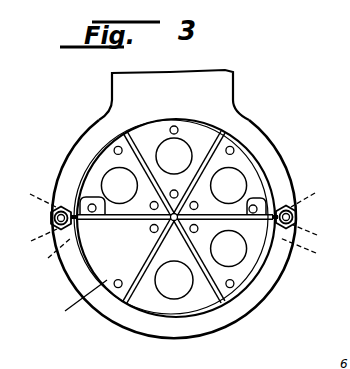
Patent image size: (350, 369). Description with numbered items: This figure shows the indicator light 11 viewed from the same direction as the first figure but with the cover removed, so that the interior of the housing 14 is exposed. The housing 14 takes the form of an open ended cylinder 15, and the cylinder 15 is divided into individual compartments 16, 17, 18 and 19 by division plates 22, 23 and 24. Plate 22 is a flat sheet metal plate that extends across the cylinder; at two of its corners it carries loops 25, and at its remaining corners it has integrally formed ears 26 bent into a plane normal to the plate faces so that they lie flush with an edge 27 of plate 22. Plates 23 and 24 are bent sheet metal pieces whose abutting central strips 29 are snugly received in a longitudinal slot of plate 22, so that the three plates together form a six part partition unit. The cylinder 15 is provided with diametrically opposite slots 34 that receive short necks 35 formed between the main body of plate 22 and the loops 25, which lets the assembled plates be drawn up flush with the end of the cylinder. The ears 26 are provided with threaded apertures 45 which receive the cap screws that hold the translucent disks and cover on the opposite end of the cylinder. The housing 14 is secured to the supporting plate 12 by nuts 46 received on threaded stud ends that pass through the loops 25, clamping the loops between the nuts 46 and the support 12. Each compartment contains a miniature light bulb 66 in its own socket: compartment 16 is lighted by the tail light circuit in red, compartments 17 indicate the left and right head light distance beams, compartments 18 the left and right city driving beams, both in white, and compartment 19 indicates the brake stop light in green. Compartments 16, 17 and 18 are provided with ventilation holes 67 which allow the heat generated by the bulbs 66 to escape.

The indicator light 11 is at (268, 140).
The supporting or mounting plate 12 is at (231, 79).
The housing 14 is at (272, 172).
The open ended cylinder 15 is at (244, 294).
The compartment 16 is at (197, 126).
The compartments 17 is at (106, 152).
The compartments 18 is at (303, 271).
The compartment 19 is at (199, 300).
The division plate 22 is at (127, 224).
The division plates 23 is at (147, 130).
The division plate 24 is at (212, 142).
The loops 25 is at (170, 239).
The ears 26 is at (86, 204).
The edge 27 is at (229, 221).
The central strips 29 is at (174, 226).
The slots 34 is at (180, 254).
The necks 35 is at (171, 195).
The apertures 45 is at (250, 206).
The nuts 46 is at (51, 218).
The light bulbs 66 is at (129, 192).
The ventilation holes 67 is at (211, 152).